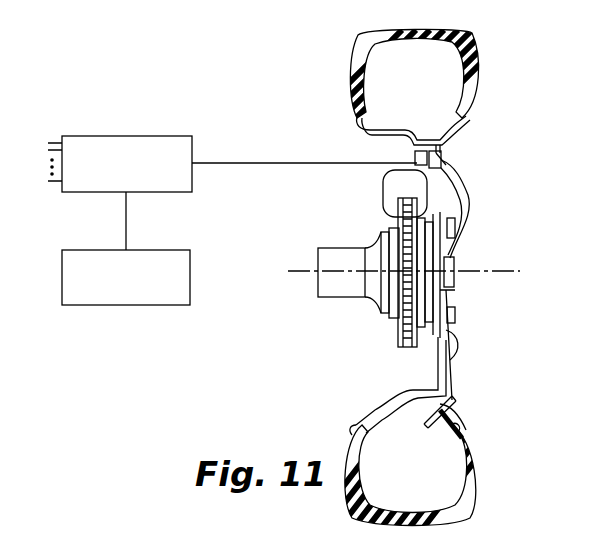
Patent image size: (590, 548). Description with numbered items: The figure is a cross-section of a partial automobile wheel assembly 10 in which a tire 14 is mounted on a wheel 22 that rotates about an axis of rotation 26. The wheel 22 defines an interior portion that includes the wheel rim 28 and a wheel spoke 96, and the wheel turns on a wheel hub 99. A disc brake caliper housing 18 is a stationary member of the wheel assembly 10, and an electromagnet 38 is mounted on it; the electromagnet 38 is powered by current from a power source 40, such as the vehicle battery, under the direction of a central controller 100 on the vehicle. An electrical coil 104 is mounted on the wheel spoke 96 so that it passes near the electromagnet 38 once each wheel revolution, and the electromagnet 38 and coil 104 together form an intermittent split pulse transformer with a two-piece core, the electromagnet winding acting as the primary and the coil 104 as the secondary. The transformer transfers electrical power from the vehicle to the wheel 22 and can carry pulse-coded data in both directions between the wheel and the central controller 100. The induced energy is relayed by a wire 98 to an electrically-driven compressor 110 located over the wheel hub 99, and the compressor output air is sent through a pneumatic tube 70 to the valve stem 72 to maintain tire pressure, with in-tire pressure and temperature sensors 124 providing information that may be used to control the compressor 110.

The wheel assembly 10 is at (531, 118).
The tire 14 is at (478, 77).
The disc brake caliper housing 18 is at (383, 195).
The wheel 22 is at (452, 188).
The axis of rotation 26 is at (456, 272).
The wheel rim 28 is at (396, 135).
The electromagnet 38 is at (415, 158).
The power source 40 is at (80, 250).
The pneumatic tube 70 is at (456, 325).
The valve stem 72 is at (452, 404).
The wheel spoke 96 is at (460, 352).
The wire 98 is at (460, 222).
The wheel hub 99 is at (455, 291).
The central controller 100 is at (84, 136).
The electrical coil 104 is at (455, 178).
The electrically-driven compressor 110 is at (456, 252).
The in-tire pressure and temperature sensors 124 is at (466, 438).